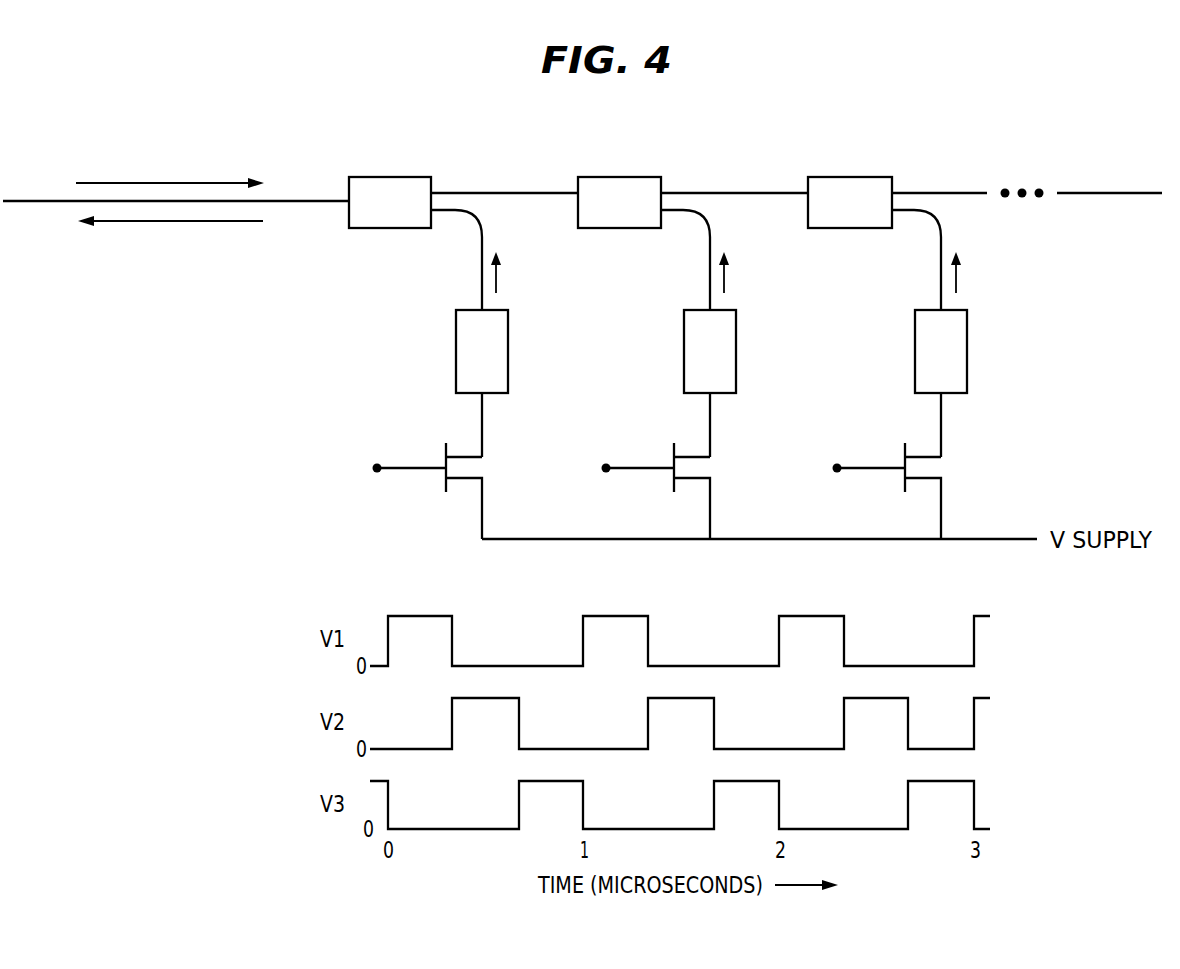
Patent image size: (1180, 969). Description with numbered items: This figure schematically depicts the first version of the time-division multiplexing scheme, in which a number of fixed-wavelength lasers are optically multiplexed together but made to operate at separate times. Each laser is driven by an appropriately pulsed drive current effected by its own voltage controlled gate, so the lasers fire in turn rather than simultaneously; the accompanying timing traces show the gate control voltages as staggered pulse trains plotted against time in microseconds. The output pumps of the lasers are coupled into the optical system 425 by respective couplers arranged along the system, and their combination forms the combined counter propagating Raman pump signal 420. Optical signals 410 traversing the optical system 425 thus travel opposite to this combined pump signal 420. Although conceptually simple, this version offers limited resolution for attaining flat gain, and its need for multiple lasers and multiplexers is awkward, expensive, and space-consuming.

The optical signals 410 is at (163, 183).
The combined counter propagating Raman pump signal 420 is at (173, 221).
The optical system 425 is at (295, 201).